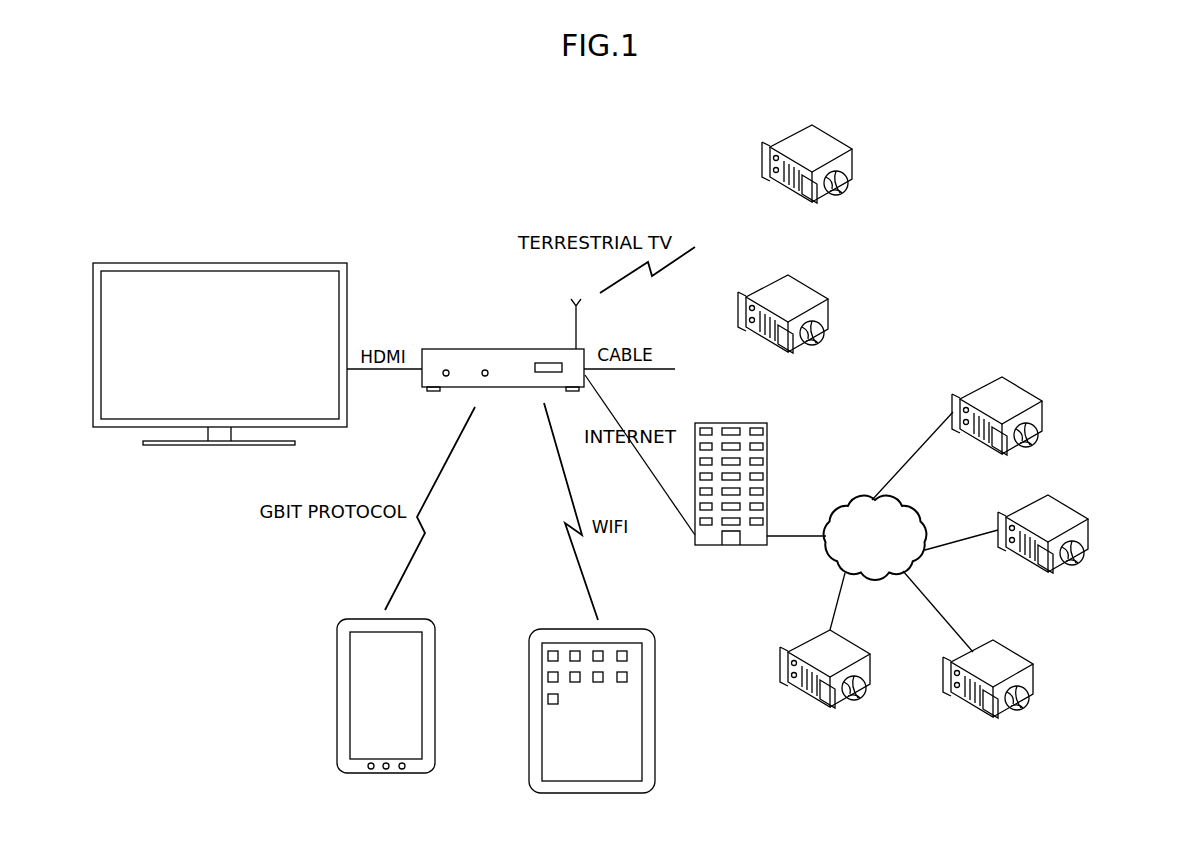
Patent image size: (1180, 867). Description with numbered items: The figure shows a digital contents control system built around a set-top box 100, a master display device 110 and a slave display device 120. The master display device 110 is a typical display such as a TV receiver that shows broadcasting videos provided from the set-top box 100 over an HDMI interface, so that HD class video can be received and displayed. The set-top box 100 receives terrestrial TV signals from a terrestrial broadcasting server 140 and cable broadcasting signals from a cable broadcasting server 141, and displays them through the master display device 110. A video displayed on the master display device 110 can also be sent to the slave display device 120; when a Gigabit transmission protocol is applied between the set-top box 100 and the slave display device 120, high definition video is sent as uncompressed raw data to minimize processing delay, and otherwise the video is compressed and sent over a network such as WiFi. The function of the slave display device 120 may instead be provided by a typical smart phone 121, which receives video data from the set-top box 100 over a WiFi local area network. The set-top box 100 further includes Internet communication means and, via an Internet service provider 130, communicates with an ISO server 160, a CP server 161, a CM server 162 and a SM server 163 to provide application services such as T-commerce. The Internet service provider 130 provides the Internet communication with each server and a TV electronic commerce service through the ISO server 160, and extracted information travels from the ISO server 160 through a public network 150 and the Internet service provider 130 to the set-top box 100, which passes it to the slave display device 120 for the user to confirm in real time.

The set-top box 100 is at (502, 349).
The master display device 110 is at (219, 263).
The slave display device 120 is at (337, 660).
The smart phone 121 is at (655, 683).
The Internet service provider 130 is at (767, 445).
The terrestrial broadcasting server 140 is at (836, 136).
The cable broadcasting server 141 is at (812, 286).
The public network 150 is at (855, 500).
The ISO server 160 is at (1026, 388).
The CP server 161 is at (1072, 506).
The CM server 162 is at (1017, 651).
The SM server 163 is at (854, 641).